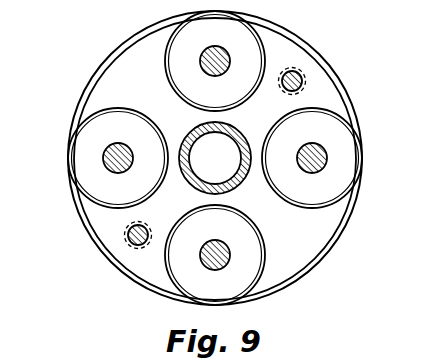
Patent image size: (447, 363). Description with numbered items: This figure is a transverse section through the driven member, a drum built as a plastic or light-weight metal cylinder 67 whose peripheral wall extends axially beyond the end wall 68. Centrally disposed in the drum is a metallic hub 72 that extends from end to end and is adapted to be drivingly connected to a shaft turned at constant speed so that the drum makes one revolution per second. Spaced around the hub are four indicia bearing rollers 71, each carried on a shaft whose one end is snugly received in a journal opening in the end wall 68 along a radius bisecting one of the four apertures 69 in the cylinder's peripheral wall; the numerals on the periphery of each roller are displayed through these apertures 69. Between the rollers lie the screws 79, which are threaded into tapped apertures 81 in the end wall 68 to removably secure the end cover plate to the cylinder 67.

The cylinder 67 is at (108, 57).
The end wall 68 is at (117, 85).
The apertures 69 is at (210, 160).
The indicia bearing rollers 71 is at (182, 40).
The hub 72 is at (197, 132).
The screws 79 is at (299, 73).
The tapped apertures 81 is at (304, 84).